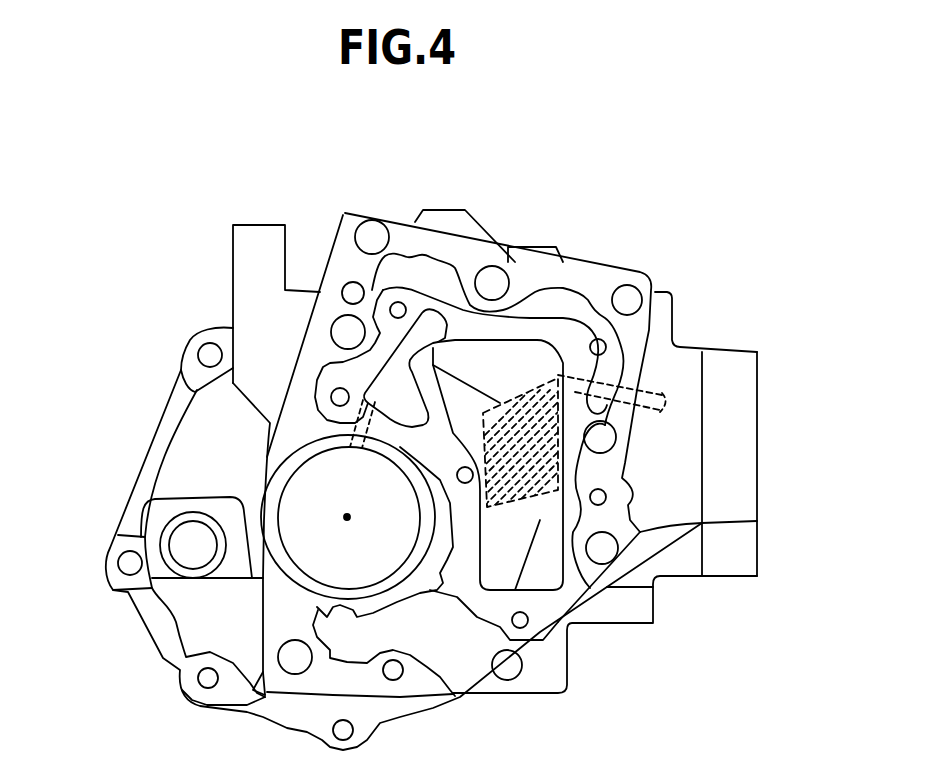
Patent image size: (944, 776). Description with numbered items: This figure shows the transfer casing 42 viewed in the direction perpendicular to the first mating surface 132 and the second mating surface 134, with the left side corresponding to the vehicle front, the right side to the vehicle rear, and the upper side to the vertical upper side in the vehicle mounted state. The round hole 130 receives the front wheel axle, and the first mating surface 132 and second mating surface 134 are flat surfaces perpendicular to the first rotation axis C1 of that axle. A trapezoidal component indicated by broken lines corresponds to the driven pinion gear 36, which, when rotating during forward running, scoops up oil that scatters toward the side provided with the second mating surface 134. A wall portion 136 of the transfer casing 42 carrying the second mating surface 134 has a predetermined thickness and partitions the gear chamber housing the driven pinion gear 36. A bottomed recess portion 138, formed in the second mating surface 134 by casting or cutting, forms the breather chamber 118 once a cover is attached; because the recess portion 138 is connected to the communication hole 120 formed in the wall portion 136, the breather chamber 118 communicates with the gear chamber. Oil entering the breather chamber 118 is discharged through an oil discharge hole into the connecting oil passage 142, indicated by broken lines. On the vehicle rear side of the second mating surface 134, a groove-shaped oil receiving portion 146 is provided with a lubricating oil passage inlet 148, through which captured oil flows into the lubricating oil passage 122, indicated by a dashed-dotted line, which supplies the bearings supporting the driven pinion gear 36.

The transfer casing 42 is at (185, 195).
The driven pinion gear 36 is at (495, 500).
The breather chamber 118 is at (375, 347).
The communication hole 120 is at (443, 350).
The lubricating oil passage 122 is at (652, 393).
The round hole 130 is at (382, 576).
The first mating surface 132 is at (527, 272).
The second mating surface 134 is at (548, 605).
The wall portion 136 is at (425, 290).
The recess portion 138 is at (390, 390).
The connecting oil passage 142 is at (369, 452).
The oil receiving portion 146 is at (578, 380).
The lubricating oil passage inlet 148 is at (600, 412).
The first rotation axis C1 is at (347, 516).